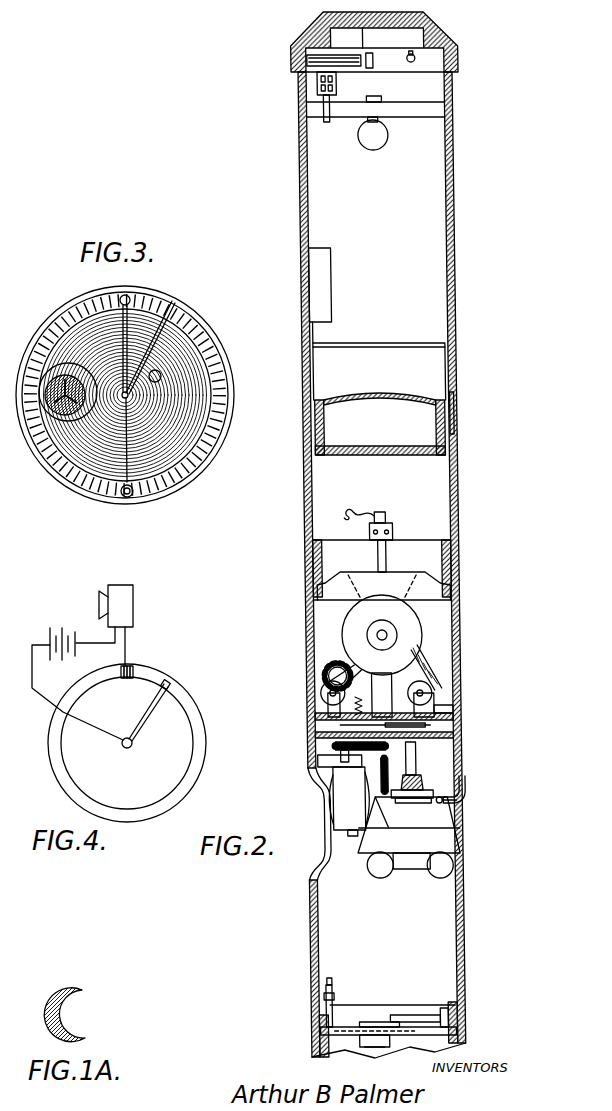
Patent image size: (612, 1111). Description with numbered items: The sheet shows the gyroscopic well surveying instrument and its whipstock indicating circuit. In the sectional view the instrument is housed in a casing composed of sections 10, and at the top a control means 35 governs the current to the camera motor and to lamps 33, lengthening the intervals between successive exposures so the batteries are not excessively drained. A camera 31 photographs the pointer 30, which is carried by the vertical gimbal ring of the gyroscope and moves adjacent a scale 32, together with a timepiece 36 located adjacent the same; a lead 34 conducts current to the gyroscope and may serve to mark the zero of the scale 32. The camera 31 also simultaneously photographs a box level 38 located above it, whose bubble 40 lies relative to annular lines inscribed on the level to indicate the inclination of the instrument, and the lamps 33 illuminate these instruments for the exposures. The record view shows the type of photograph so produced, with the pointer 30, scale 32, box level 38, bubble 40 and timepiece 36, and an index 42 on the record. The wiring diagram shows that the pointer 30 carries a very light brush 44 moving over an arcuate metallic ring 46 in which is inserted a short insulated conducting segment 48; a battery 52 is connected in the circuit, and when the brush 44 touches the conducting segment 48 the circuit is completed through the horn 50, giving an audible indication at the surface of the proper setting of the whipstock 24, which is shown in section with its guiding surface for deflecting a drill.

In FIG. 2, the sections 10 is at (456, 298).
In FIG. 1A, the whipstock 24 is at (72, 989).
In FIG. 2, the pointer 30 is at (346, 1023).
In FIG. 3, the pointer 30 is at (160, 337).
In FIG. 4, the pointer 30 is at (145, 720).
In FIG. 2, the camera 31 is at (373, 695).
In FIG. 3, the scale 32 is at (148, 488).
In FIG. 2, the lamps 33 is at (380, 142).
In FIG. 2, the lead 34 is at (404, 1016).
In FIG. 3, the lead 34 is at (118, 328).
In FIG. 2, the means 35 is at (412, 38).
In FIG. 2, the timepiece 36 is at (289, 1030).
In FIG. 3, the timepiece 36 is at (57, 427).
In FIG. 2, the box level 38 is at (366, 397).
In FIG. 3, the box level 38 is at (187, 427).
In FIG. 3, the bubble 40 is at (163, 373).
In FIG. 3, the index line 42 is at (125, 452).
In FIG. 3, the brush 44 is at (180, 293).
In FIG. 4, the brush 44 is at (169, 683).
In FIG. 4, the arcuate metallic ring 46 is at (52, 752).
In FIG. 4, the conducting segment 48 is at (127, 679).
In FIG. 4, the horn 50 is at (135, 600).
In FIG. 4, the battery 52 is at (59, 633).